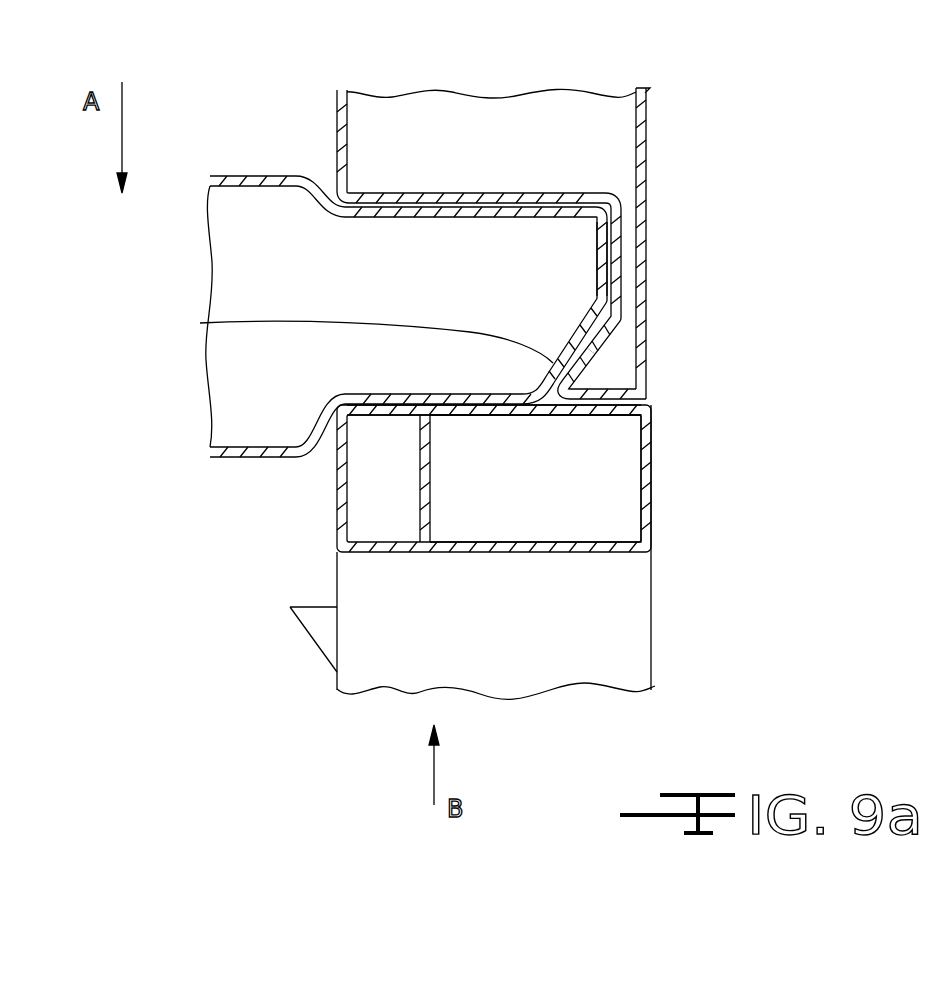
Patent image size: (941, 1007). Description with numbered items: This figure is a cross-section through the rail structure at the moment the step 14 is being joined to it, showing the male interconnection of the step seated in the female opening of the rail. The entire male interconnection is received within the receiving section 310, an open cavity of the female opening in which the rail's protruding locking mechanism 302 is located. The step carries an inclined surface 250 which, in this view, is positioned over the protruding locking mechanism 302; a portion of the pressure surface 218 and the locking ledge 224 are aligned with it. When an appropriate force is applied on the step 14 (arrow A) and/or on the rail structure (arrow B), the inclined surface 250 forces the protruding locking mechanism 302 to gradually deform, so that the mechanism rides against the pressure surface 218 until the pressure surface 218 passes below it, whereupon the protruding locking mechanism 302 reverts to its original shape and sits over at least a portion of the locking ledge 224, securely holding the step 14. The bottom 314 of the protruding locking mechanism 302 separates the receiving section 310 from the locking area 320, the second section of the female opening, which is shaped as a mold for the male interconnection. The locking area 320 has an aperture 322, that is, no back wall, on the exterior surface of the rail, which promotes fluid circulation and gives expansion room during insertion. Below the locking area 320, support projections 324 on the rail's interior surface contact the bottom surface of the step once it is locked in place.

The step 14 is at (247, 158).
The locking ledge 224 is at (565, 207).
The pressure surface 218 is at (603, 252).
The receiving section 310 is at (687, 393).
The inclined surface 250 is at (200, 323).
The protruding locking mechanism 302 is at (617, 377).
The locking area 320 is at (687, 405).
The bottom of the protruding locking mechanism 314 is at (597, 394).
The aperture 322 is at (600, 505).
The support projections 324 is at (297, 627).